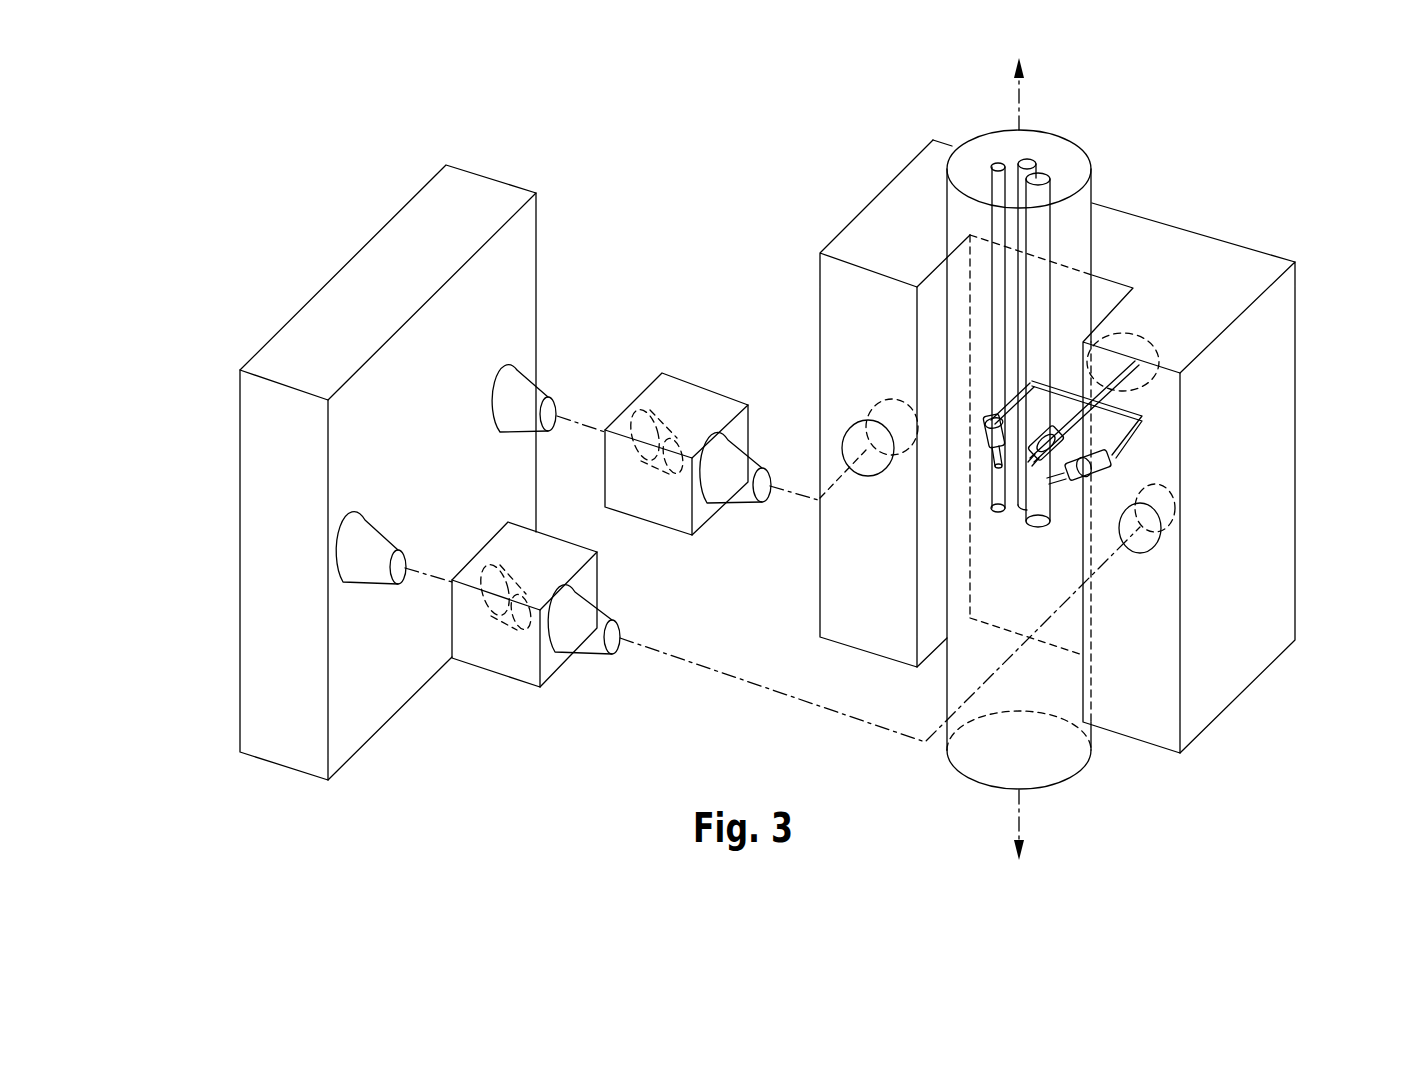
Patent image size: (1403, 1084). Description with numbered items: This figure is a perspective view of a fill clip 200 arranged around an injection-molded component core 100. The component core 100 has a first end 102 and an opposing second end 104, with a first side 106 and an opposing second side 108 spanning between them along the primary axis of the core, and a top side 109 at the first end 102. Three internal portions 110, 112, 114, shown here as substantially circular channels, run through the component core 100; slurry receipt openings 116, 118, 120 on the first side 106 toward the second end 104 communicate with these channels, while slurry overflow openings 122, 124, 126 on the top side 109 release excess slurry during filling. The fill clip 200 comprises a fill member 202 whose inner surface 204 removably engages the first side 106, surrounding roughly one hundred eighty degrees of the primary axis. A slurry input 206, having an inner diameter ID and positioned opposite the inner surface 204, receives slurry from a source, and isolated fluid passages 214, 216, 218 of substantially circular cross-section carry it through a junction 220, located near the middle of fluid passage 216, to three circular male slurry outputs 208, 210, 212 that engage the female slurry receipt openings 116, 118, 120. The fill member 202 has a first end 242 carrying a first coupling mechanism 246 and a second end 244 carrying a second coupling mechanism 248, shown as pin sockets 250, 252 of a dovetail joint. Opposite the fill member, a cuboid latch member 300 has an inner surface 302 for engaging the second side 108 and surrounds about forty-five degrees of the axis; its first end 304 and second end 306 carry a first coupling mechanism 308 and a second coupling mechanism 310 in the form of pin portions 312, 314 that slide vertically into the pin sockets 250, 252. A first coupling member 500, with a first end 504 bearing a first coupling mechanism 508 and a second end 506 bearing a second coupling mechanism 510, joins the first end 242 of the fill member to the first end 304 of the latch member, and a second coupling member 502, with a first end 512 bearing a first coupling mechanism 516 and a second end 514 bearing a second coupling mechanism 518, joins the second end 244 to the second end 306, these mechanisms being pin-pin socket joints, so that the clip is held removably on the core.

The component core 100 is at (1051, 459).
The first end 102 is at (1092, 210).
The second end 104 is at (947, 670).
The first side 106 is at (1100, 125).
The second side 108 is at (955, 322).
The top side 109 is at (1062, 157).
The internal portion 110 is at (955, 331).
The internal portion 112 is at (1080, 344).
The internal portion 114 is at (1095, 377).
The slurry receipt opening 116 is at (992, 455).
The slurry receipt opening 118 is at (1068, 480).
The slurry receipt opening 120 is at (1090, 505).
The slurry overflow opening 122 is at (995, 160).
The slurry overflow opening 124 is at (1030, 160).
The slurry overflow opening 126 is at (1048, 177).
The fill clip 200 is at (350, 98).
The fill member 202 is at (1076, 446).
The inner surface 204 is at (858, 245).
The slurry input 206 is at (1216, 326).
The slurry output 208 is at (992, 418).
The slurry output 210 is at (1040, 432).
The slurry output 212 is at (1125, 465).
The fluid passage 214 is at (1105, 370).
The fluid passage 216 is at (1120, 403).
The fluid passage 218 is at (1130, 455).
The junction 220 is at (1160, 397).
The first end 242 is at (849, 245).
The second end 244 is at (1226, 392).
The first coupling mechanism 246 is at (860, 438).
The second coupling mechanism 248 is at (1148, 532).
The pin socket 250 is at (872, 418).
The pin socket 252 is at (1207, 523).
The latch member 300 is at (414, 465).
The inner surface 302 is at (373, 396).
The first end 304 is at (538, 240).
The second end 306 is at (330, 458).
The first coupling mechanism 308 is at (566, 376).
The second coupling mechanism 310 is at (368, 572).
The pin portion 312 is at (525, 395).
The pin portion 314 is at (382, 580).
The first coupling member 500 is at (693, 420).
The second coupling member 502 is at (557, 640).
The first end 504 is at (722, 418).
The second end 506 is at (640, 404).
The first coupling mechanism 508 is at (752, 470).
The second coupling mechanism 510 is at (640, 398).
The first end 512 is at (600, 572).
The second end 514 is at (505, 543).
The first coupling mechanism 516 is at (588, 636).
The second coupling mechanism 518 is at (500, 612).